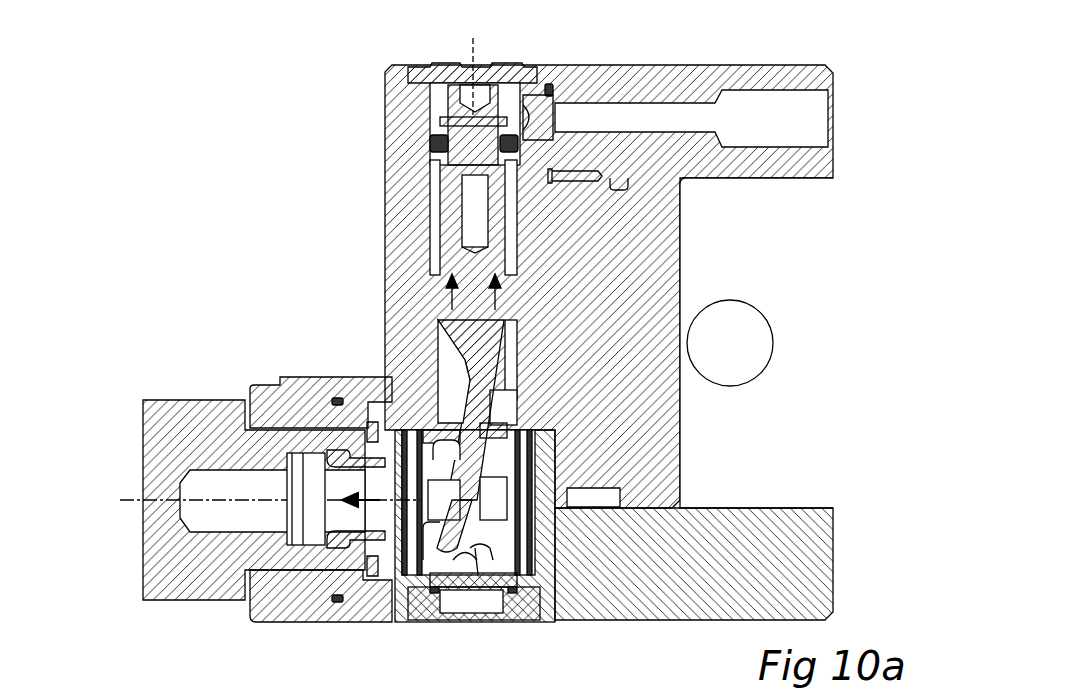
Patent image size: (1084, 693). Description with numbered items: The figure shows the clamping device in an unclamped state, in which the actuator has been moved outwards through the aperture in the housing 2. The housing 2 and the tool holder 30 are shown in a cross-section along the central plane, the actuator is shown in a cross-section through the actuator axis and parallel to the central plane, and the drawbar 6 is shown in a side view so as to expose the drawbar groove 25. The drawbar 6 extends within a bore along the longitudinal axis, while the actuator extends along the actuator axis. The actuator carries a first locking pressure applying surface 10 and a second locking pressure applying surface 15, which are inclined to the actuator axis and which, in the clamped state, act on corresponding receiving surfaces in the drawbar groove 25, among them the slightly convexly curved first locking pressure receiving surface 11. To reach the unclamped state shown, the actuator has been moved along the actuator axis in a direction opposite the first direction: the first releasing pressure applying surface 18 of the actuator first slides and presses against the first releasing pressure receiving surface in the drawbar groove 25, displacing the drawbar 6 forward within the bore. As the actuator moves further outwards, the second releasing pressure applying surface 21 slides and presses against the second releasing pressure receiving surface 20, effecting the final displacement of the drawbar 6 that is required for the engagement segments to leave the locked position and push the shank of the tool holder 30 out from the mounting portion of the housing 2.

The housing 2 is at (393, 186).
The drawbar 6 is at (318, 530).
The first locking pressure applying surface 10 is at (513, 406).
The first locking pressure receiving surface 11 is at (480, 547).
The second locking pressure applying surface 15 is at (463, 483).
The first releasing pressure applying surface 18 is at (468, 382).
The second releasing pressure receiving surface 20 is at (436, 530).
The second releasing pressure applying surface 21 is at (443, 447).
The drawbar groove 25 is at (455, 547).
The tool holder 30 is at (155, 425).